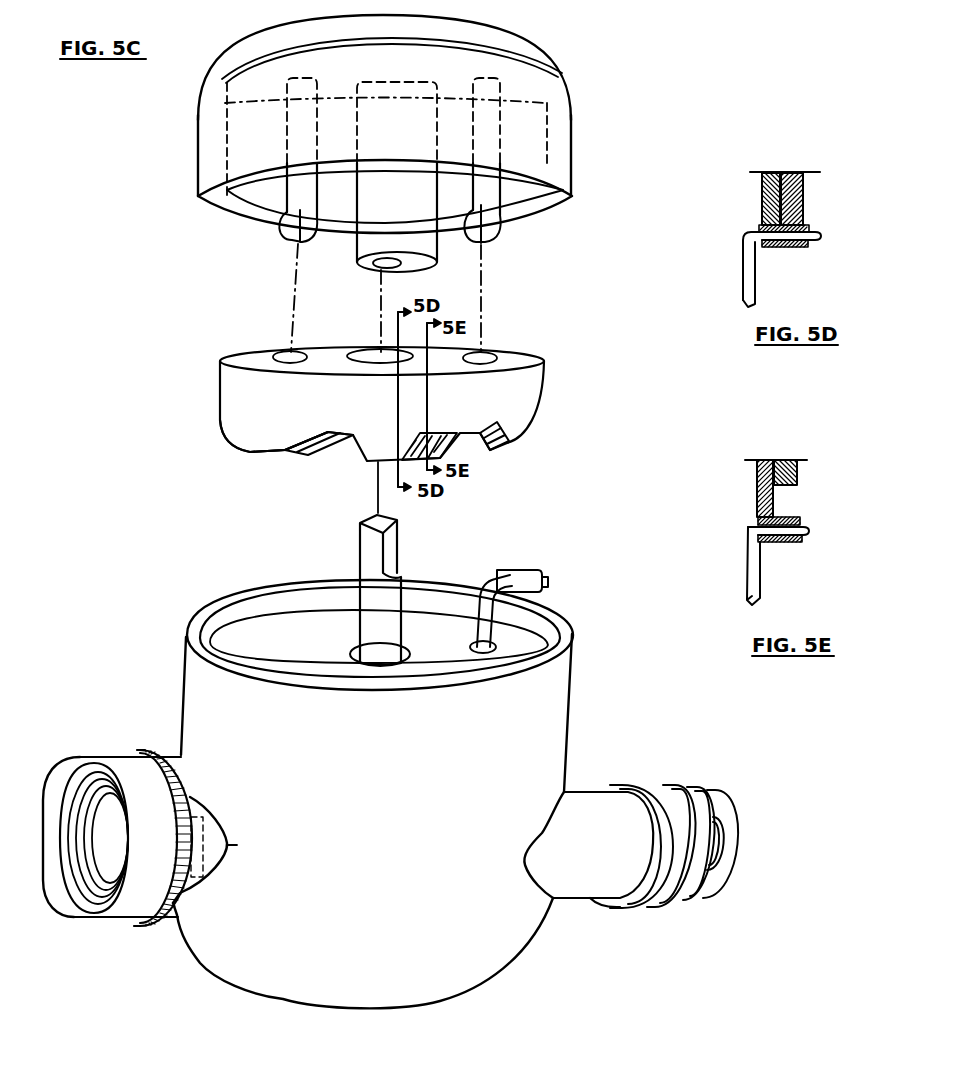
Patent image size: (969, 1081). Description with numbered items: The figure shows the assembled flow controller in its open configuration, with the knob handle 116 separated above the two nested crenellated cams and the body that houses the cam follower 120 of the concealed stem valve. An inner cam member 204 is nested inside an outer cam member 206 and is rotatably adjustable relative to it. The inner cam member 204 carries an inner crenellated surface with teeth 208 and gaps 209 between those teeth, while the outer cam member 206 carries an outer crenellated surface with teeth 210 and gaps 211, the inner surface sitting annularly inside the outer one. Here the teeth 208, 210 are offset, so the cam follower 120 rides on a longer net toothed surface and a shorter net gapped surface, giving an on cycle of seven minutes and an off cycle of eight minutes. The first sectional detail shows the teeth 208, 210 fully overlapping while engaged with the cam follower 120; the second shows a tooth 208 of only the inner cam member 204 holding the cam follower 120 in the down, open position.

In FIG. 5C, the knob handle 116 is at (575, 82).
In FIG. 5C, the cam follower 120 is at (516, 569).
In FIG. 5D, the cam follower 120 is at (798, 251).
In FIG. 5E, the cam follower 120 is at (790, 548).
In FIG. 5C, the inner cam member 204 is at (303, 477).
In FIG. 5C, the outer cam member 206 is at (298, 425).
In FIG. 5C, the teeth 208 is at (302, 453).
In FIG. 5D, the teeth 208 is at (768, 203).
In FIG. 5E, the teeth 208 is at (760, 493).
In FIG. 5C, the gaps 209 is at (478, 451).
In FIG. 5C, the teeth 210 is at (247, 452).
In FIG. 5D, the teeth 210 is at (803, 202).
In FIG. 5E, the teeth 210 is at (797, 483).
In FIG. 5C, the gaps 211 is at (429, 446).